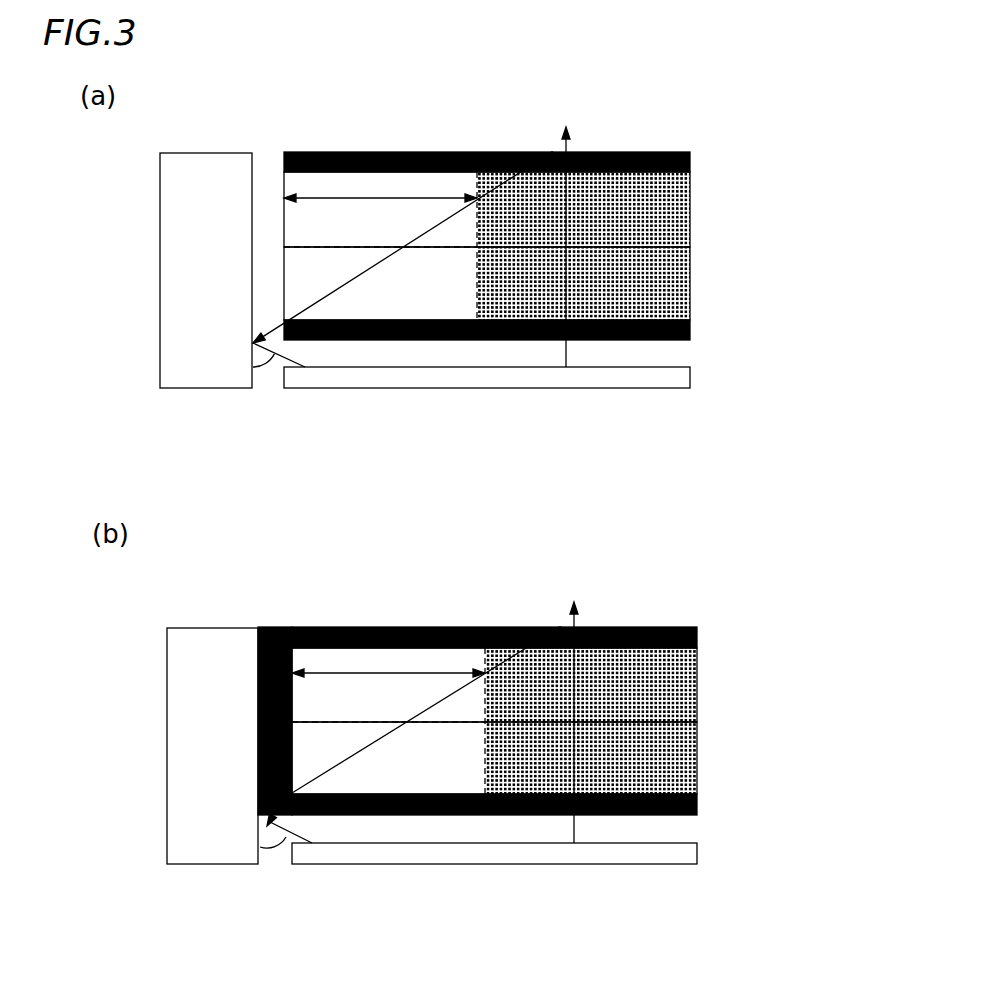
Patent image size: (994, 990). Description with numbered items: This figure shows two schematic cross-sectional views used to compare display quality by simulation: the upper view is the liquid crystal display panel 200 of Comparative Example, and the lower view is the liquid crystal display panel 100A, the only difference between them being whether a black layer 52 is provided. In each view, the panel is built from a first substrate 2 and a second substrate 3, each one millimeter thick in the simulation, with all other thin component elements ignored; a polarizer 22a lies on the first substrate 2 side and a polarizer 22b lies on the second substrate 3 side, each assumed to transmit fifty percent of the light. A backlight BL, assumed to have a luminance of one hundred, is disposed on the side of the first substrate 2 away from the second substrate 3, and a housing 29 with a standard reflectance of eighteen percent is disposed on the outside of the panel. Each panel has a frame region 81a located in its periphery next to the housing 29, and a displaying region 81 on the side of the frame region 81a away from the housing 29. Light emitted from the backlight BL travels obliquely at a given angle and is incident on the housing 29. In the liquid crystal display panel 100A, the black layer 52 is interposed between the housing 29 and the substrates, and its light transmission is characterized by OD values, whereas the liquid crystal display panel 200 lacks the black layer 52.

The liquid crystal display panel 200 is at (820, 136).
The liquid crystal display panel 100A is at (827, 590).
The housing 29 is at (170, 369).
The black layer 52 is at (276, 626).
The polarizer 22b is at (682, 159).
The second substrate 3 is at (683, 206).
The first substrate 2 is at (683, 282).
The polarizer 22a is at (683, 331).
The backlight BL is at (672, 375).
The displaying region 81 is at (623, 193).
The frame region 81a is at (384, 427).